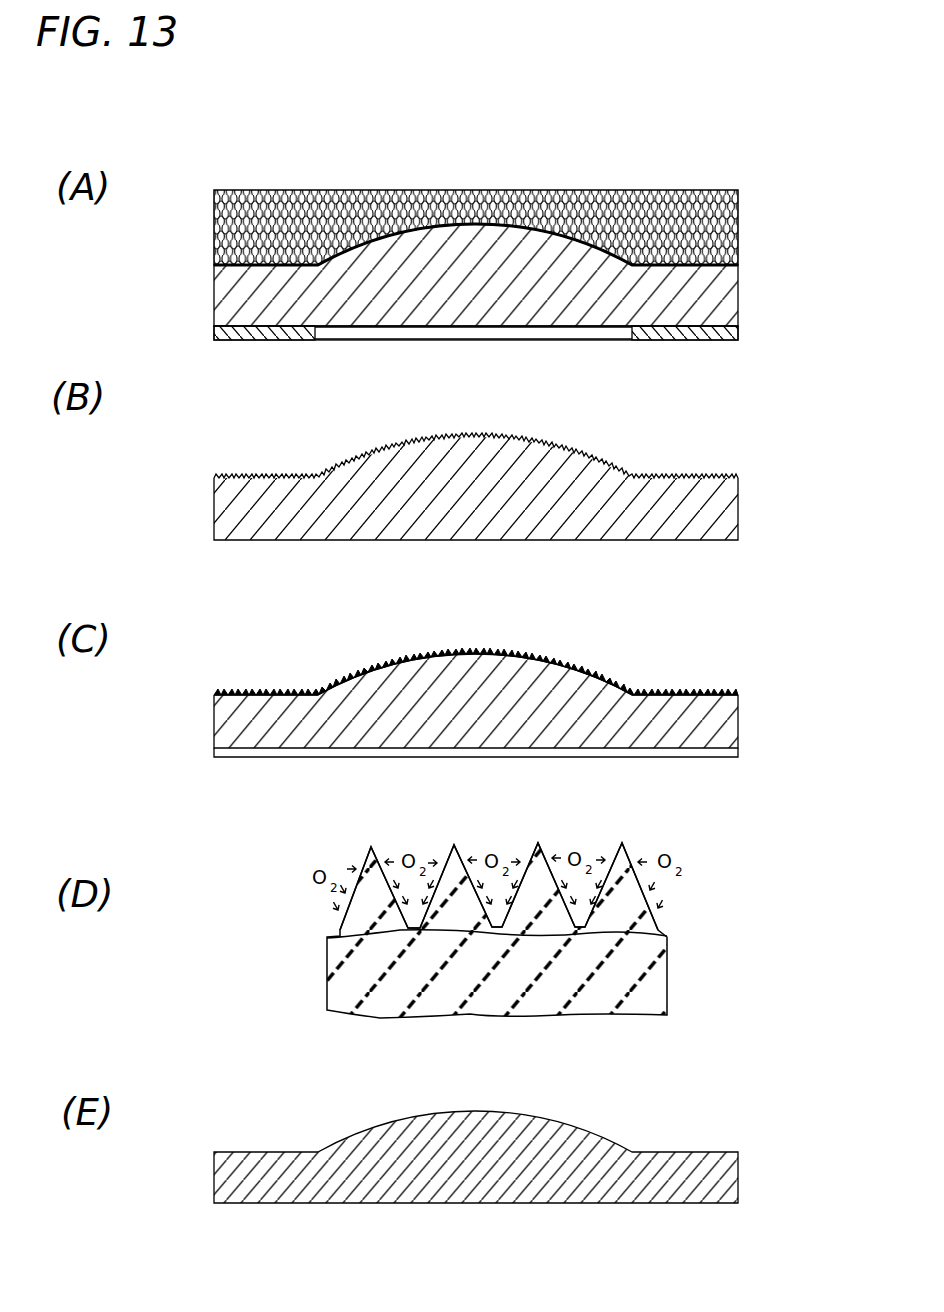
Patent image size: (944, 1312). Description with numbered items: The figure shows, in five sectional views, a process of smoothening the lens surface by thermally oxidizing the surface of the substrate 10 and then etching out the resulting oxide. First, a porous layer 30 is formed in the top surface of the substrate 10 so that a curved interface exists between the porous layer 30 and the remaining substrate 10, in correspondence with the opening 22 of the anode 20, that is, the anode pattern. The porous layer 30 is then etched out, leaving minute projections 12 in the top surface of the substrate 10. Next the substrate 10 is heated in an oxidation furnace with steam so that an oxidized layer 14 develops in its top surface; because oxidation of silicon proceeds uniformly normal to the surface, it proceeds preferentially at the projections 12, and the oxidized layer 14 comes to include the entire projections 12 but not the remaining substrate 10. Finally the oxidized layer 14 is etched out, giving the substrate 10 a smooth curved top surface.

The substrate 10 is at (740, 289).
The minute projections 12 is at (497, 437).
The oxidized layer 14 is at (591, 681).
The anode 20 is at (740, 335).
The recess 22 is at (560, 339).
The porous layer 30 is at (741, 194).